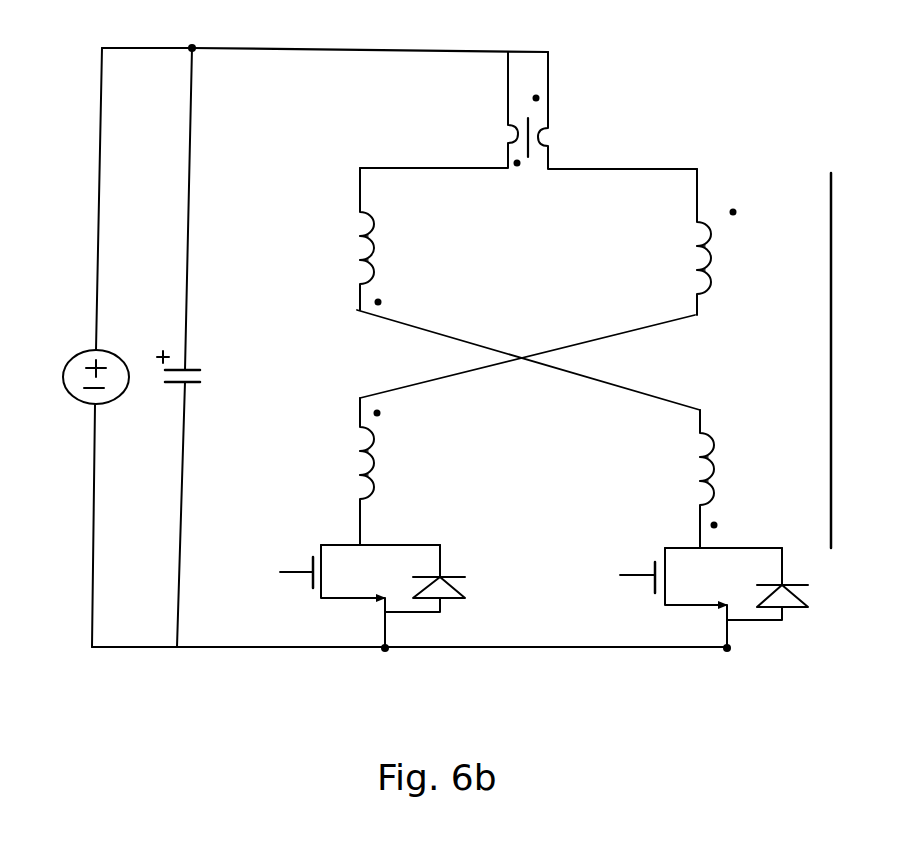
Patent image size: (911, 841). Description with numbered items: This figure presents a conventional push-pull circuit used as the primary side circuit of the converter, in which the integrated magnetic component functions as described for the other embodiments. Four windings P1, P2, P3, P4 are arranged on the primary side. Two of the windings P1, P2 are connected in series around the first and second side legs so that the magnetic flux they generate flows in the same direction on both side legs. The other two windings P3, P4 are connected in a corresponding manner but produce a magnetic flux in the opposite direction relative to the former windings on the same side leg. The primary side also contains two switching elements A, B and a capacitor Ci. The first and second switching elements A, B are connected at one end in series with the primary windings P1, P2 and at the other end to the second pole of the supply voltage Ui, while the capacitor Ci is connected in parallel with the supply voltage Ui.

The supply voltage Ui is at (84, 350).
The capacitor Ci is at (194, 347).
The winding P1 is at (378, 275).
The winding P2 is at (725, 500).
The winding P3 is at (727, 278).
The winding P4 is at (383, 490).
The switching element A is at (321, 543).
The switching element B is at (667, 548).